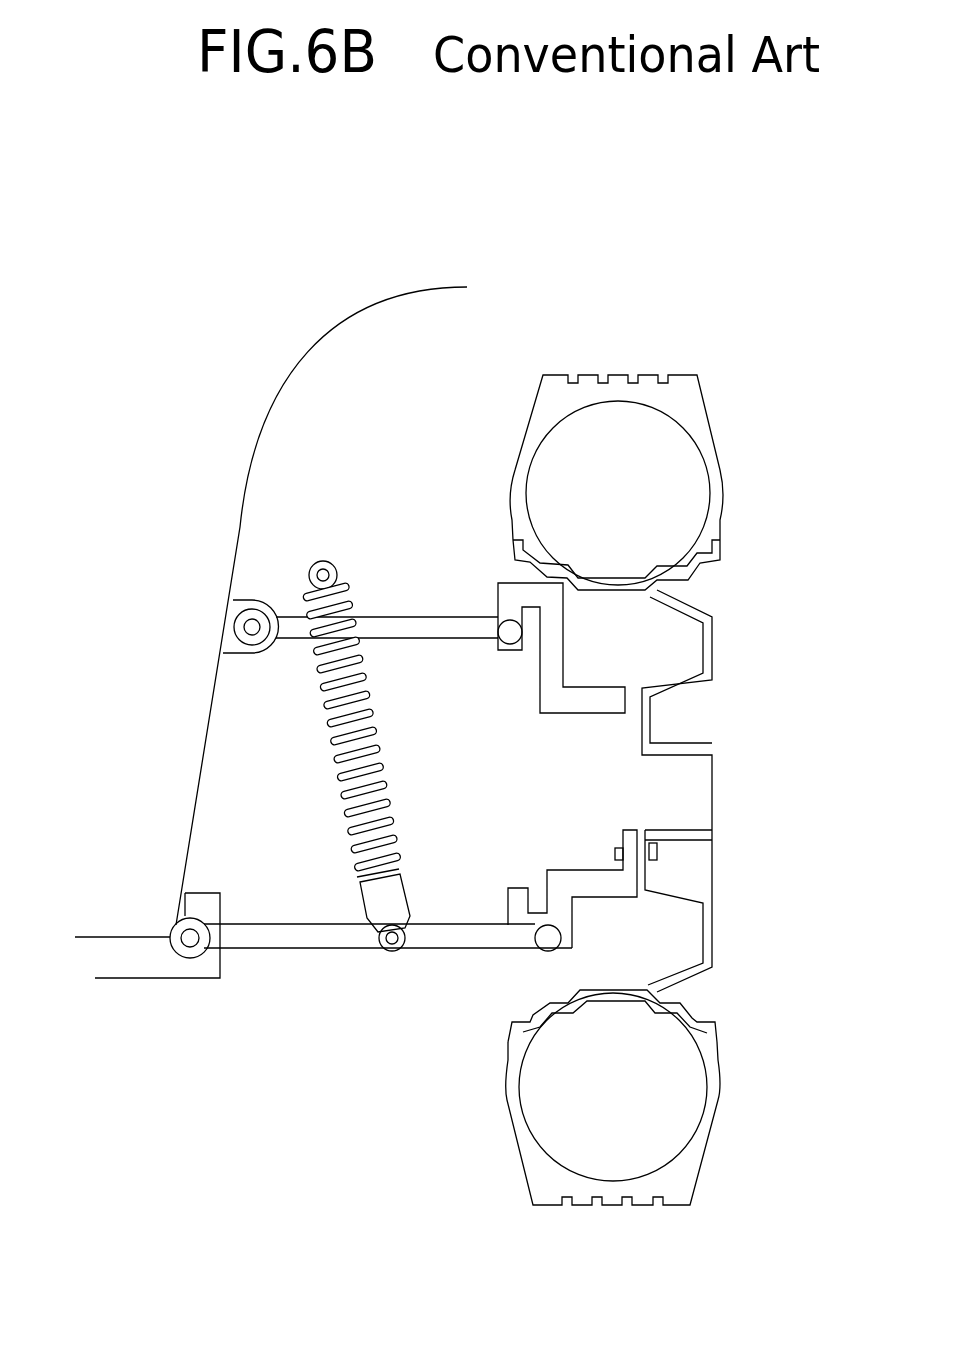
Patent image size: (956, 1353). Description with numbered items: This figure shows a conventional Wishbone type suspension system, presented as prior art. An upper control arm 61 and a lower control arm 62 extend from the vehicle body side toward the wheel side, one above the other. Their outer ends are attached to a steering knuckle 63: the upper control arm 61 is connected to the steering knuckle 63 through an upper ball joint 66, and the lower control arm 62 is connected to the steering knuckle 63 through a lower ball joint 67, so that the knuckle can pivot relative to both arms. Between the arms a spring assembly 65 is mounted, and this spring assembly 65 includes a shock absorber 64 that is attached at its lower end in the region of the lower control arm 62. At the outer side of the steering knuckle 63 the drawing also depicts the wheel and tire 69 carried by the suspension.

The upper control arm 61 is at (393, 628).
The lower control arm 62 is at (295, 937).
The steering knuckle 63 is at (582, 702).
The shock absorber 64 is at (372, 903).
The spring assembly 65 is at (313, 702).
The ball joint 66 is at (502, 618).
The ball joint 67 is at (545, 940).
The tire 69 is at (693, 415).